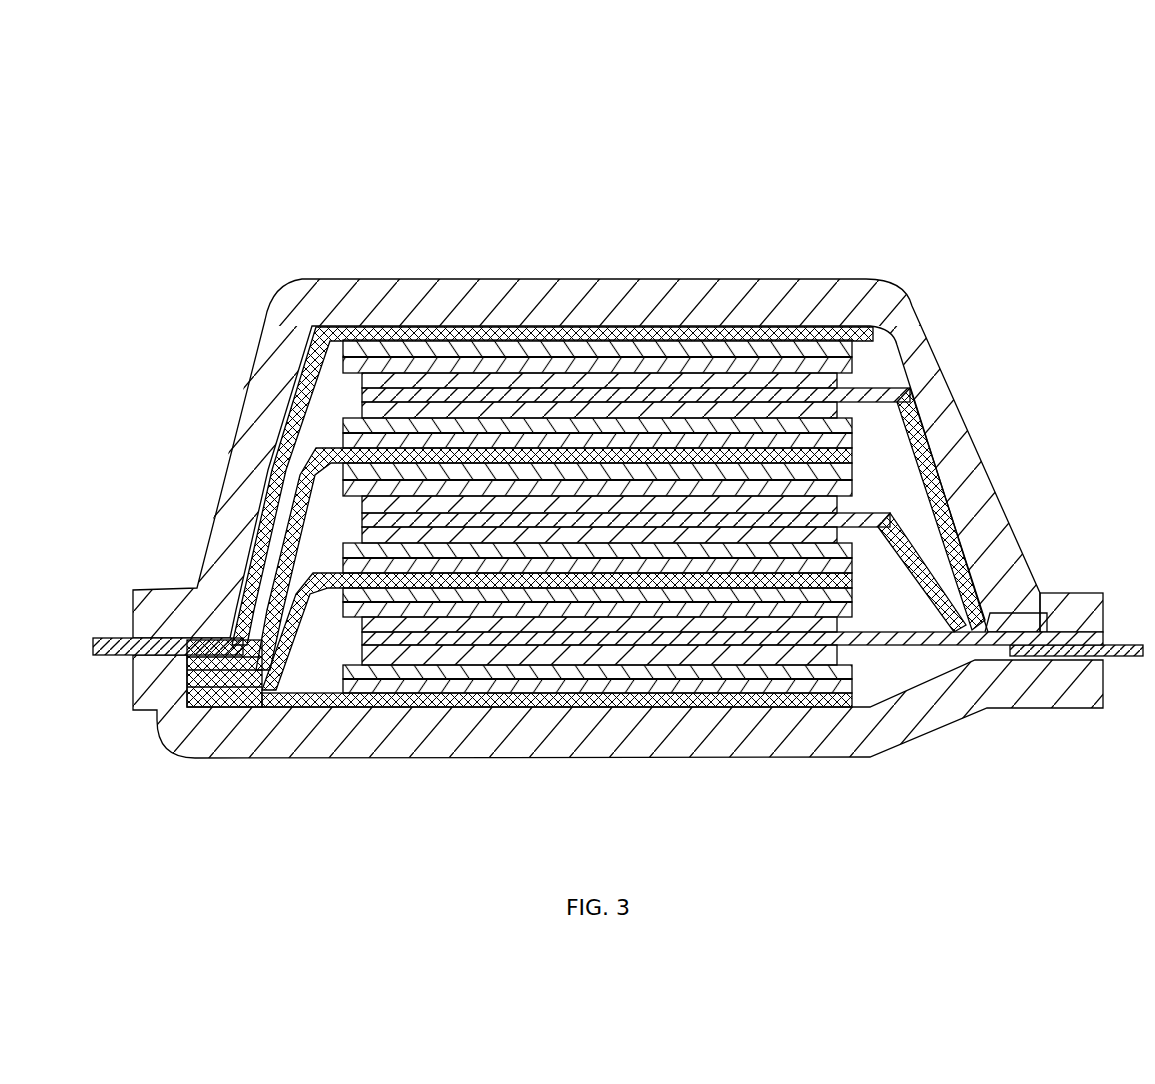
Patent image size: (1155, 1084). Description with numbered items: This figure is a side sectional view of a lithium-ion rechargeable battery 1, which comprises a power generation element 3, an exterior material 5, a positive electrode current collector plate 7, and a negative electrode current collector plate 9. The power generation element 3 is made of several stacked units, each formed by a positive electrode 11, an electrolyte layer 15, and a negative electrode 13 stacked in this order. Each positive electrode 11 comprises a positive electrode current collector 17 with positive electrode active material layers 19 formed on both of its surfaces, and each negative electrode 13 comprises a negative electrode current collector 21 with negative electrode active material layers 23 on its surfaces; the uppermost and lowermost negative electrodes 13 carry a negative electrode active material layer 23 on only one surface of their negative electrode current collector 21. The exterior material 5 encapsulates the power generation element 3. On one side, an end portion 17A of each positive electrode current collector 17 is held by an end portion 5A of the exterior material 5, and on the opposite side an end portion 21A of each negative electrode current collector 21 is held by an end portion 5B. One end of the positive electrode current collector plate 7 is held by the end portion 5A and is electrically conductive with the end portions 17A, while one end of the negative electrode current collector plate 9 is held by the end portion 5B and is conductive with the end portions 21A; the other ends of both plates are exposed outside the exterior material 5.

The lithium-ion rechargeable battery 1 is at (200, 172).
The power generation element 3 is at (870, 612).
The exterior material 5 is at (1062, 593).
The end portion of the exterior material 5A is at (1042, 602).
The end portion of the exterior material 5B is at (228, 714).
The positive electrode current collector plate 7 is at (1120, 645).
The negative electrode current collector plate 9 is at (122, 637).
The positive electrode 11 is at (356, 374).
The negative electrode 13 is at (856, 334).
The electrolyte layer 15 is at (600, 348).
The positive electrode current collector 17 is at (512, 362).
The end portion of the positive electrode current collector 17A is at (1056, 626).
The positive electrode active material layer 19 is at (552, 390).
The negative electrode current collector 21 is at (697, 334).
The end portion of the negative electrode current collector 21A is at (195, 690).
The negative electrode active material layer 23 is at (648, 395).